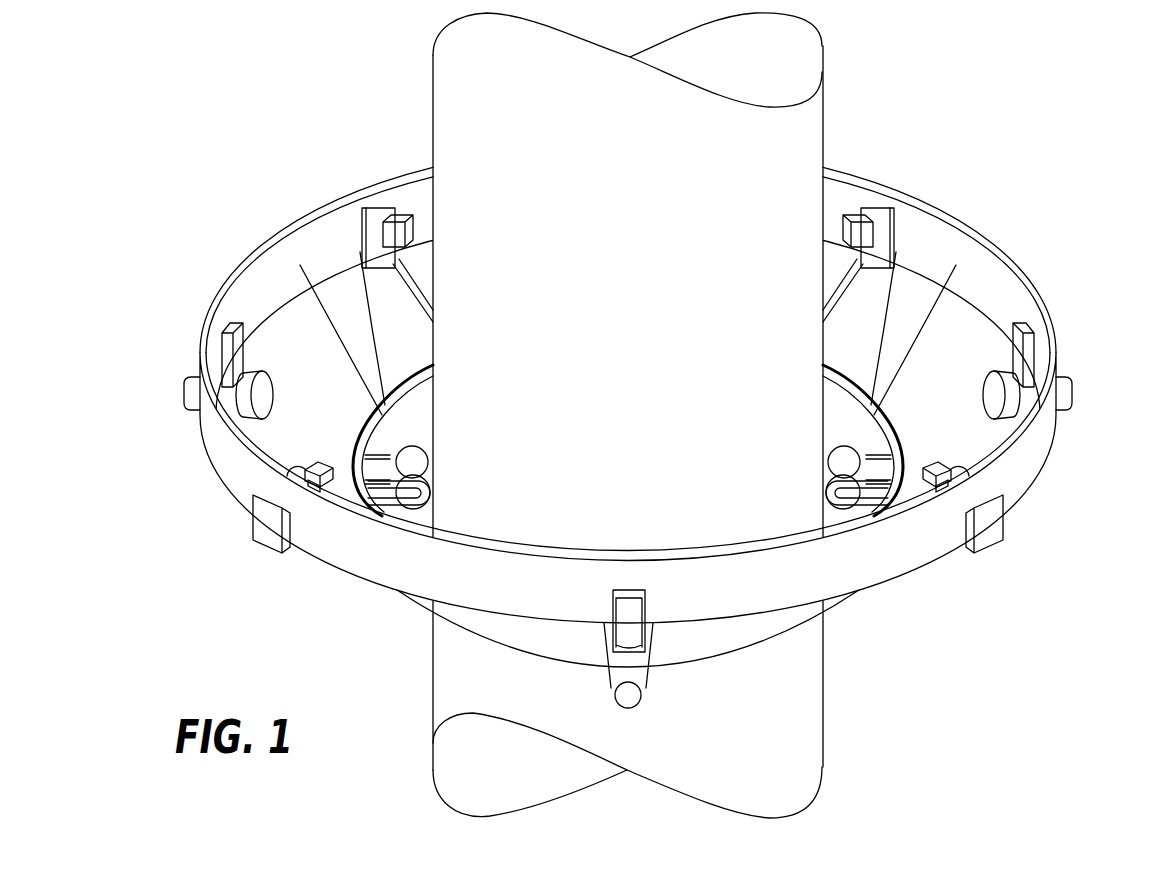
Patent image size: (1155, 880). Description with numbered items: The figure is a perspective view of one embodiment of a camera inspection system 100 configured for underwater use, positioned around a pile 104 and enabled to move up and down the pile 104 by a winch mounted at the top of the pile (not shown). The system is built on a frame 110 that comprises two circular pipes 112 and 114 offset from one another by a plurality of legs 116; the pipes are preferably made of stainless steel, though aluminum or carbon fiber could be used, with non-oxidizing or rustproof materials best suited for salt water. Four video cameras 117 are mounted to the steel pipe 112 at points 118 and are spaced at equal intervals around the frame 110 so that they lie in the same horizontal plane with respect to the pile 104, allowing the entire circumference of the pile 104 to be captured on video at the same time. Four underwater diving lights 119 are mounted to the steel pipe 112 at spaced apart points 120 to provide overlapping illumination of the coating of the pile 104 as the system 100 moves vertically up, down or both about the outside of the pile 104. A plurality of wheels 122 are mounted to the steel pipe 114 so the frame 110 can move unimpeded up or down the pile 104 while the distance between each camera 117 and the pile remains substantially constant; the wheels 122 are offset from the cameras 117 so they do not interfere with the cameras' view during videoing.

The camera inspection system 100 is at (319, 85).
The pile 104 is at (433, 135).
The frame 110 is at (1022, 459).
The circular pipe 112 is at (237, 458).
The circular pipe 114 is at (386, 294).
The legs 116 is at (392, 285).
The video cameras 117 is at (384, 212).
The mounting points 118 is at (360, 254).
The underwater diving lights 119 is at (270, 372).
The spaced apart points 120 is at (186, 392).
The wheels 122 is at (393, 425).